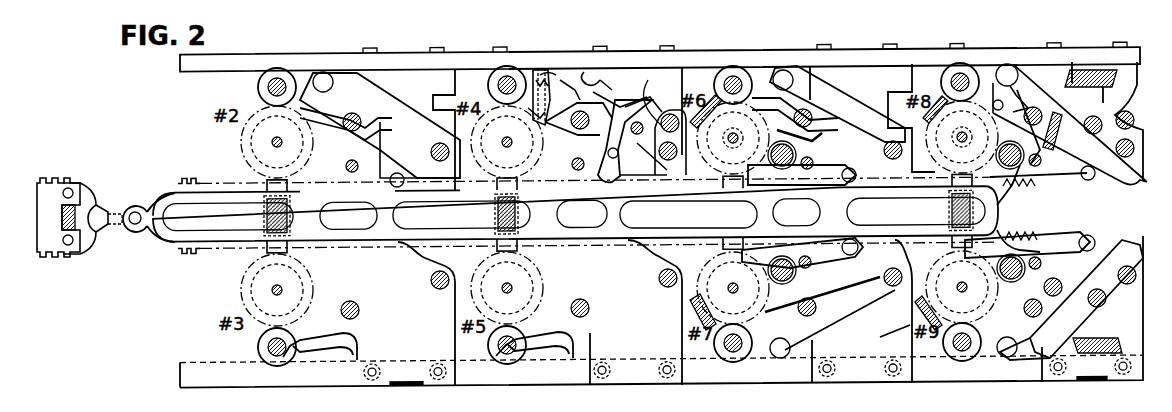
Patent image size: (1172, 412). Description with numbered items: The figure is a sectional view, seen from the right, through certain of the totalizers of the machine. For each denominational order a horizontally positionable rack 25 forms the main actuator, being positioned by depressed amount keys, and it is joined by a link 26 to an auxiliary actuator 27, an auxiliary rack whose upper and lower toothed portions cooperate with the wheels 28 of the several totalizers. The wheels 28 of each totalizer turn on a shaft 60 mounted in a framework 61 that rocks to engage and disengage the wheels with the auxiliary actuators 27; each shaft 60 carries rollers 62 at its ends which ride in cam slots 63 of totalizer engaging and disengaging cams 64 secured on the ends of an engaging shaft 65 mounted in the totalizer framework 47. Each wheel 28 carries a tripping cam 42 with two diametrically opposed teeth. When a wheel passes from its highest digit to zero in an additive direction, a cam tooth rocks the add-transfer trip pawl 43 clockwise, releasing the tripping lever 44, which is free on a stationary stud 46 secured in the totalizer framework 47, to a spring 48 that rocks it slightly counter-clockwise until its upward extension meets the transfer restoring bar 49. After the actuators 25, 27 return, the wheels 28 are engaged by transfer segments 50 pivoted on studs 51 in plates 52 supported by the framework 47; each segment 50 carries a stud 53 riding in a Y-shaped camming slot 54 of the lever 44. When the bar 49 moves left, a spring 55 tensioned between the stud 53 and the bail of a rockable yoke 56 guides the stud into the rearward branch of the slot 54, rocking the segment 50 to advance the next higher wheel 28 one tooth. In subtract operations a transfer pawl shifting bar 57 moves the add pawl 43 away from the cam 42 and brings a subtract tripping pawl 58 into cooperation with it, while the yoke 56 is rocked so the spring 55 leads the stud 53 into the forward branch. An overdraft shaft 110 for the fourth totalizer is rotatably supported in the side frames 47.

The rack 25 is at (68, 157).
The link 26 is at (88, 237).
The auxiliary actuator 27 is at (153, 203).
The wheels 28 is at (300, 148).
The tripping cam 42 is at (302, 160).
The add-transfer trip pawl 43 is at (1015, 120).
The tripping lever 44 is at (593, 92).
The stationary stud 46 is at (637, 120).
The totalizer framework 47 is at (832, 66).
The spring 48 is at (636, 201).
The transfer restoring bar 49 is at (1093, 70).
The transfer segments 50 is at (528, 108).
The studs 51 is at (548, 68).
The plates 52 is at (823, 100).
The stud 53 is at (540, 127).
The Y-shaped camming slot 54 is at (540, 75).
The spring 55 is at (570, 80).
The rockable yoke 56 is at (592, 74).
The transfer pawl shifting bar 57 is at (1055, 125).
The subtract tripping pawl 58 is at (997, 200).
The shaft 60 is at (962, 137).
The framework 61 is at (816, 210).
The rollers 62 is at (745, 166).
The cam slots 63 is at (800, 136).
The totalizer engaging and disengaging cams 64 is at (756, 100).
The engaging shaft 65 is at (505, 78).
The overdraft shaft 110 is at (663, 95).